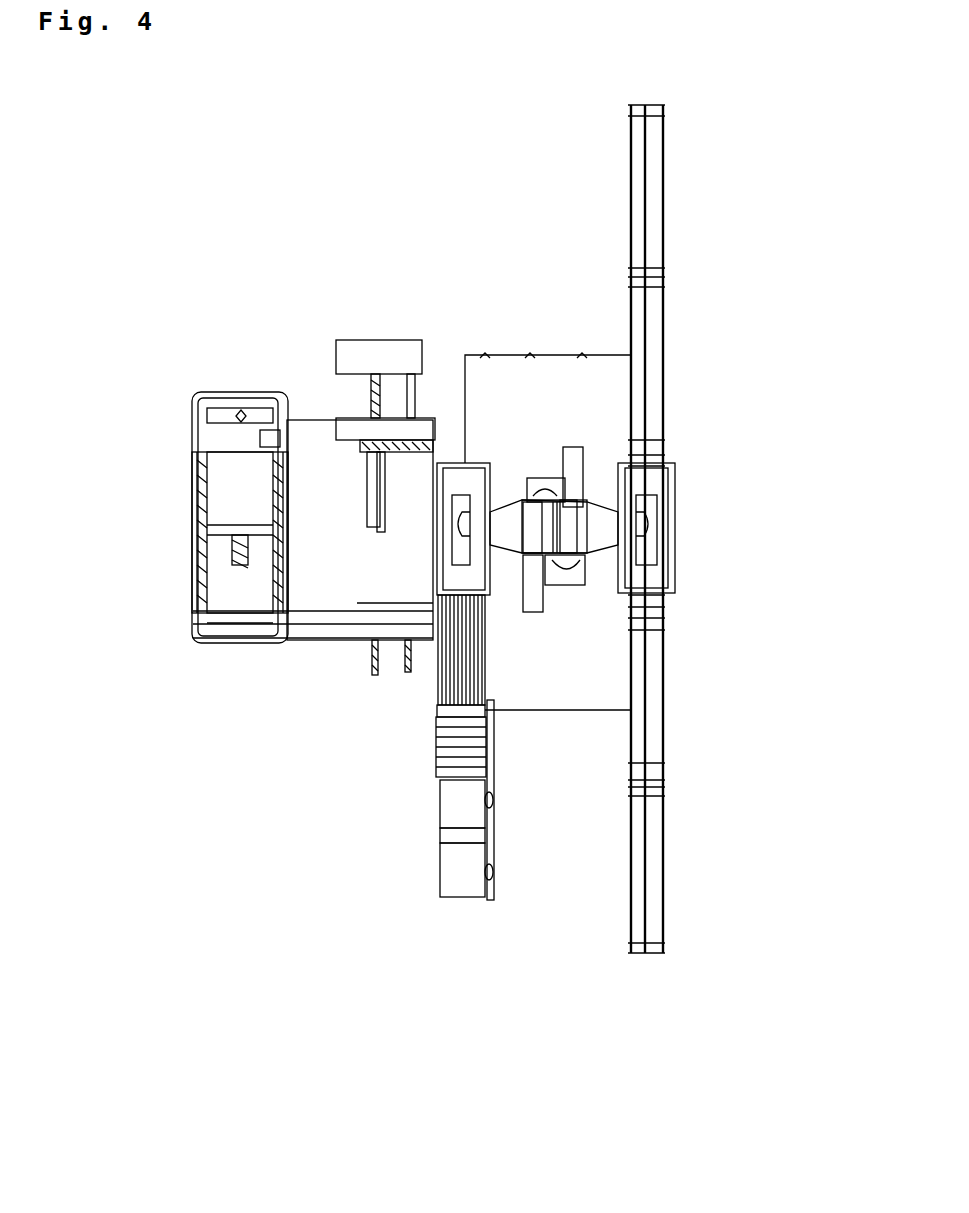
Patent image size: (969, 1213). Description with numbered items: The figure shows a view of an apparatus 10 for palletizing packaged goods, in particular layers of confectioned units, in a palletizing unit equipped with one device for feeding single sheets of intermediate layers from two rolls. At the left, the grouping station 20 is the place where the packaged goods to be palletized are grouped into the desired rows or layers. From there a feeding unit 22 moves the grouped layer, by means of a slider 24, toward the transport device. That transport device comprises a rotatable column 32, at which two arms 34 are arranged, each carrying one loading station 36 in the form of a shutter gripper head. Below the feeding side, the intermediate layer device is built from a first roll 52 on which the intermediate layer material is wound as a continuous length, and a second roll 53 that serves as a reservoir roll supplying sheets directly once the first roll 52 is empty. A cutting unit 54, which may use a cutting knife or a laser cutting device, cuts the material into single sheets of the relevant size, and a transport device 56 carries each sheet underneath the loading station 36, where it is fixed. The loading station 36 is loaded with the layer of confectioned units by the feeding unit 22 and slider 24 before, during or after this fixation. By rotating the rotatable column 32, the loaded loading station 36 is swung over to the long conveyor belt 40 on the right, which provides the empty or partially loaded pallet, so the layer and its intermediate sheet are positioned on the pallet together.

The apparatus 10 is at (244, 1007).
The grouping station 20 is at (240, 517).
The feeding unit 22 is at (407, 553).
The slider 24 is at (383, 533).
The rotatable column 32 is at (545, 517).
The arm 34 is at (597, 513).
The loading station 36 is at (658, 572).
The conveyor belt 40 is at (640, 847).
The roll 52 is at (467, 798).
The second roll 53 is at (457, 880).
The cutting unit 54 is at (483, 753).
The transport device 56 is at (457, 632).